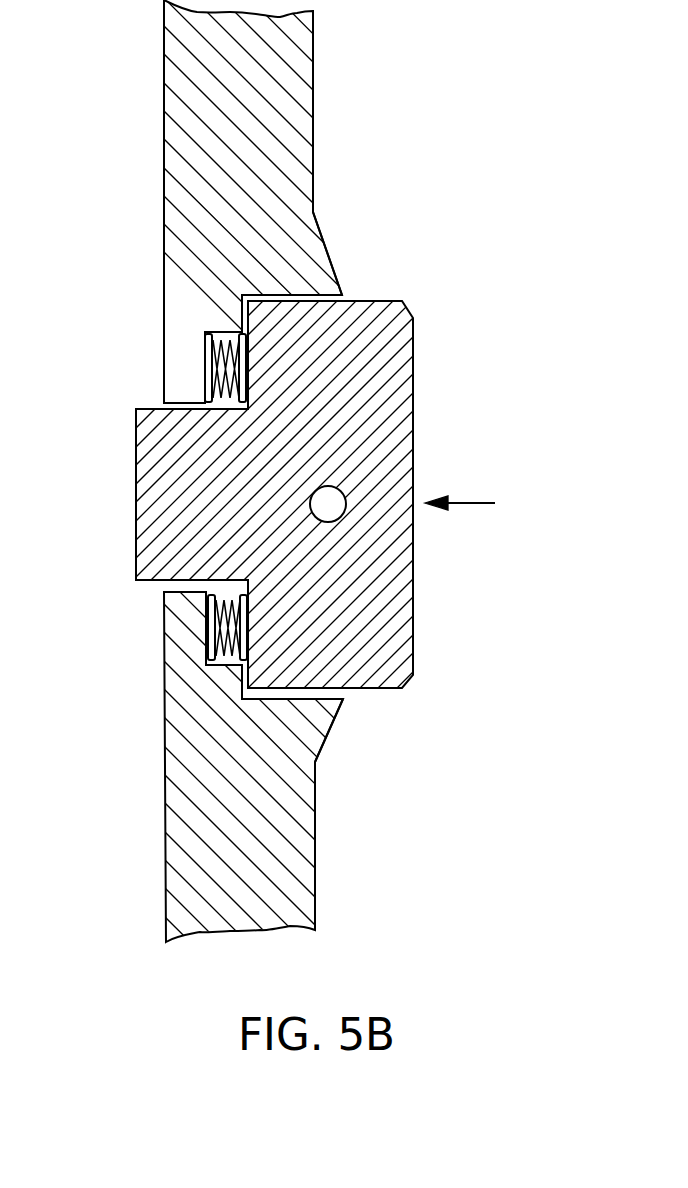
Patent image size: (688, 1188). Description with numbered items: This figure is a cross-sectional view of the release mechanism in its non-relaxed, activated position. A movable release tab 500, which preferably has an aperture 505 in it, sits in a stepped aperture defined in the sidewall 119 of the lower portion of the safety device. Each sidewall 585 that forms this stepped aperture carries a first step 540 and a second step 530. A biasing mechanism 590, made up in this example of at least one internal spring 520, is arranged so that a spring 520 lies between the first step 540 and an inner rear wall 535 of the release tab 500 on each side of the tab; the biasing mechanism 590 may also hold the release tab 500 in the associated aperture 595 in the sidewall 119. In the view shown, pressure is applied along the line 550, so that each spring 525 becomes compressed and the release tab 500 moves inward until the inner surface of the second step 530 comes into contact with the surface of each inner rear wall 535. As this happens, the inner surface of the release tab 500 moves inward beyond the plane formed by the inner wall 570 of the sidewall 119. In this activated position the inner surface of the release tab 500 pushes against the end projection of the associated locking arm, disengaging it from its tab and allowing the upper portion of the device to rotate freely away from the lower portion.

The sidewall 119 is at (288, 848).
The inner wall 570 is at (173, 127).
The sidewall 585 is at (280, 297).
The second step 530 is at (242, 296).
The spring 525 is at (203, 331).
The biasing mechanism 590 is at (203, 409).
The aperture 595 is at (157, 403).
The first step 540 is at (205, 355).
The release tab 500 is at (390, 355).
The aperture 505 is at (333, 512).
The spring 520 is at (226, 607).
The inner rear wall 535 is at (248, 345).
The line 550 is at (462, 503).